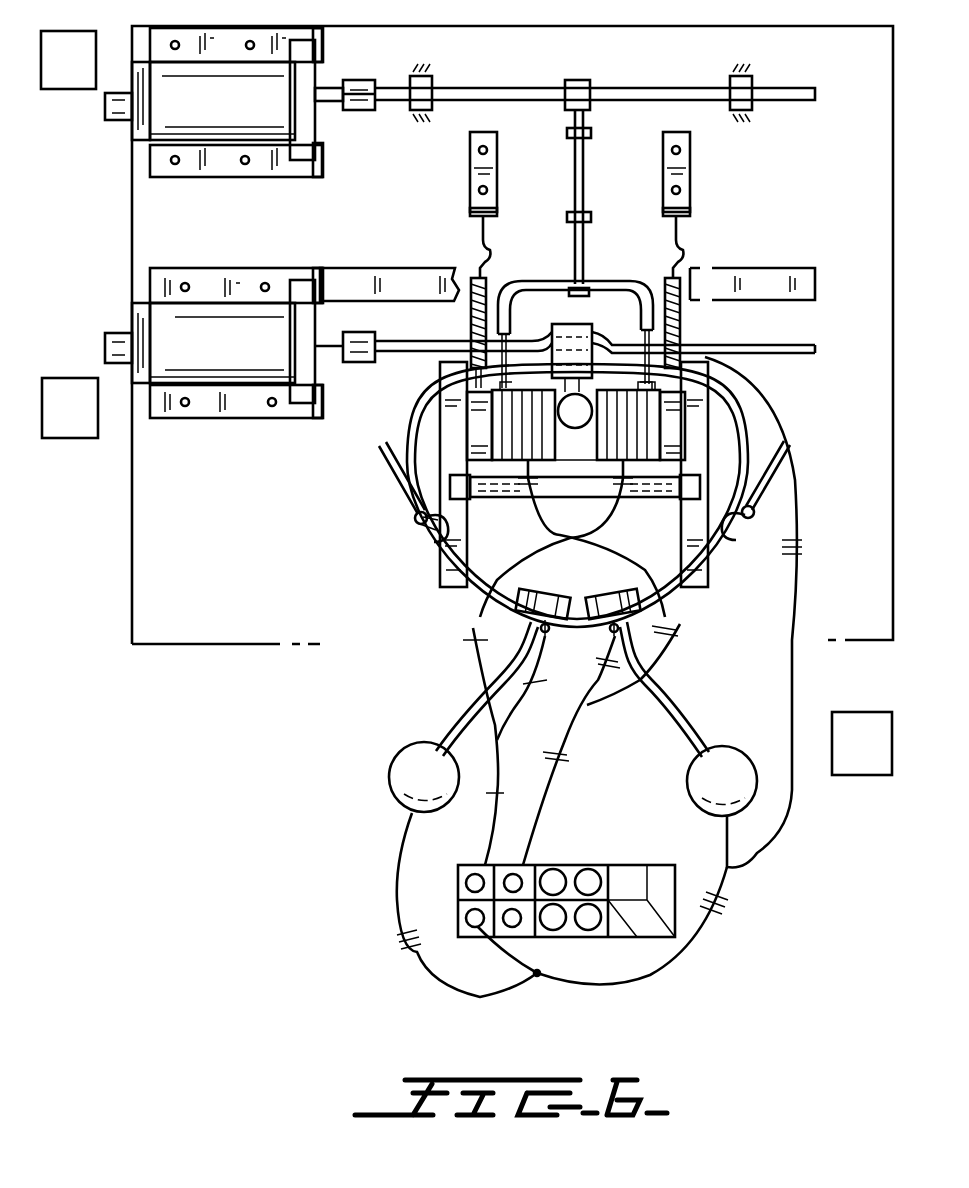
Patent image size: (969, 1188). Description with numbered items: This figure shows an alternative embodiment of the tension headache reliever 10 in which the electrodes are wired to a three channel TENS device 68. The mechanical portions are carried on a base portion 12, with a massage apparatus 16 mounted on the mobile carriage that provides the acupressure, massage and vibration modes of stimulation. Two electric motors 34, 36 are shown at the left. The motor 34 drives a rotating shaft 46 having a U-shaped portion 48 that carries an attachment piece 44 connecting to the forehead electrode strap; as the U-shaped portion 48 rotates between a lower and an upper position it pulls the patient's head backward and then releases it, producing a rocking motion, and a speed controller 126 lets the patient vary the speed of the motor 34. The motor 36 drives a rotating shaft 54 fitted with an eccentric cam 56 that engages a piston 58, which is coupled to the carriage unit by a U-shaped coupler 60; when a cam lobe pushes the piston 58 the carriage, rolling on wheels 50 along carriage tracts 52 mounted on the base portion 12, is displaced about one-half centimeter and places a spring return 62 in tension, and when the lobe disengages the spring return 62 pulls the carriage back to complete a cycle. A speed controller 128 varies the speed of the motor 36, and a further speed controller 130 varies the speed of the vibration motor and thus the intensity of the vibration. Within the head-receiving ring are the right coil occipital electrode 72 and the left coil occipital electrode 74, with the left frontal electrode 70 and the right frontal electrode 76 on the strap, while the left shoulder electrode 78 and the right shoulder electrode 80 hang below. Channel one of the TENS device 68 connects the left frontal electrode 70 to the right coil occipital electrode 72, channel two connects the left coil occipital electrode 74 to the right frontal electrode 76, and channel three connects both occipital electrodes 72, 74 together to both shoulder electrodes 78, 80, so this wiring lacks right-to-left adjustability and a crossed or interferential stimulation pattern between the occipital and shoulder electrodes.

The tension headache reliever 10 is at (118, 254).
The base portion 12 is at (830, 218).
The massage apparatus 16 is at (716, 176).
The motor 34 is at (275, 418).
The motor 36 is at (275, 178).
The attachment piece 44 is at (584, 334).
The rotating shaft 46 is at (436, 338).
The U-shaped portion 48 is at (535, 335).
The wheels 50 is at (430, 528).
The carriage tracts 52 is at (440, 590).
The rotating shaft 54 is at (462, 88).
The eccentric cam 56 is at (598, 84).
The piston 58 is at (587, 188).
The U-shaped coupler 60 is at (596, 290).
The spring return 62 is at (472, 236).
The three channel TENS device 68 is at (648, 866).
The left frontal electrode 70 is at (556, 592).
The right coil occipital electrode 72 is at (655, 440).
The left coil occipital electrode 74 is at (485, 440).
The right frontal electrode 76 is at (608, 592).
The left shoulder electrode 78 is at (390, 778).
The right shoulder electrode 80 is at (748, 734).
The speed controller 126 is at (143, 370).
The speed controller 128 is at (143, 80).
The speed controller 130 is at (707, 590).